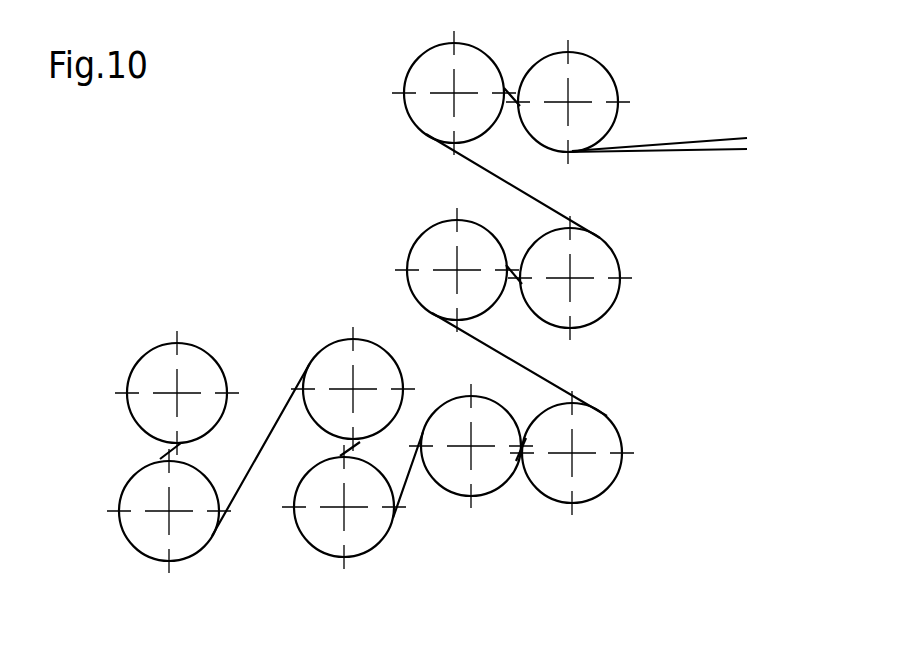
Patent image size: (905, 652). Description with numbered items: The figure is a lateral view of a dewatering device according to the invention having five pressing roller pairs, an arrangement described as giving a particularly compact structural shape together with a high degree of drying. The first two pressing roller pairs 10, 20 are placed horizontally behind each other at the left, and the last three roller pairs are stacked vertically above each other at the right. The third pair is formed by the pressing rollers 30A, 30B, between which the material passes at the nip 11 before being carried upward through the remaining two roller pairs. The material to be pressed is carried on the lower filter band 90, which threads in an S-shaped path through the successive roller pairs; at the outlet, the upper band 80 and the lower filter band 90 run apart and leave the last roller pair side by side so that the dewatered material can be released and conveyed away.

The pair of pressing rollers 10 is at (143, 367).
The pair of pressing rollers 20 is at (317, 363).
The pressing roller 30A is at (458, 413).
The pressing roller 30B is at (595, 427).
The laminated web nip 11 is at (518, 457).
The separated layer 80 is at (702, 138).
The lower filter band 90 is at (710, 152).